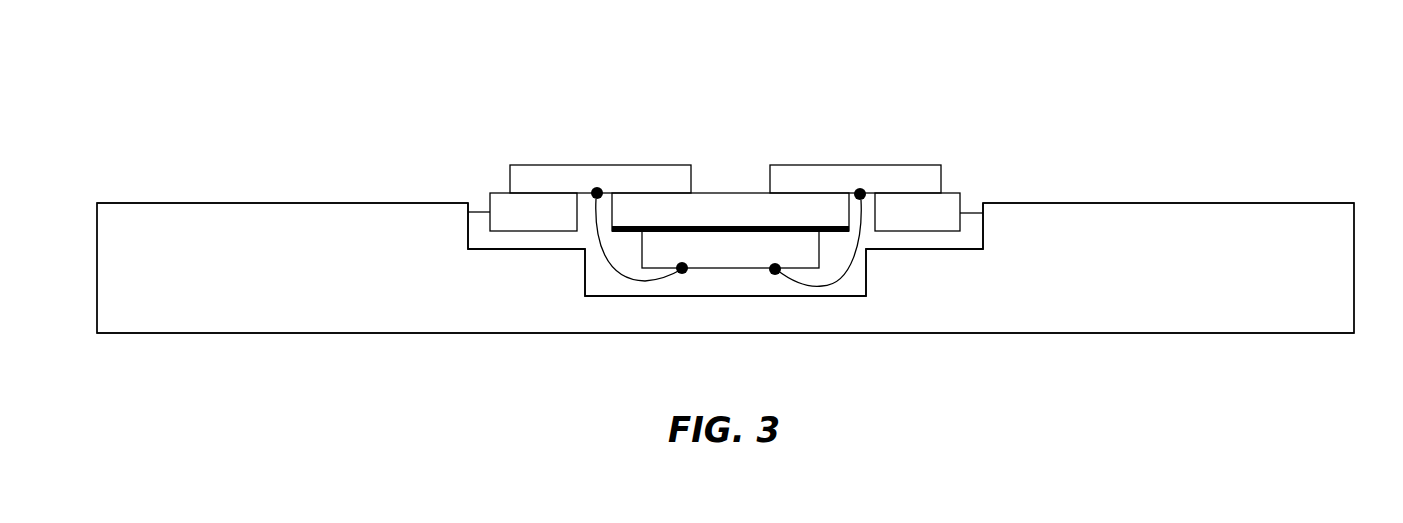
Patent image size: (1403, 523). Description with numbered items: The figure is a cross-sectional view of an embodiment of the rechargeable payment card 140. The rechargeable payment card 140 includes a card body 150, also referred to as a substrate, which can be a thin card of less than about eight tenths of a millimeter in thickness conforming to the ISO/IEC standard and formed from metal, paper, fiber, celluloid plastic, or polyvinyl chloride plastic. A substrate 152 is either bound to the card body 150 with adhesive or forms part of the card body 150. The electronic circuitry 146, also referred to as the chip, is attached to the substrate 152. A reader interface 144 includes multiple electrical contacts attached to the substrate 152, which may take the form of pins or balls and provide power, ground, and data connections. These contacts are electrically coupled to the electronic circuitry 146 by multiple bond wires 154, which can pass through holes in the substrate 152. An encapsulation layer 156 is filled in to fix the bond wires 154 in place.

The rechargeable payment card 140 is at (1132, 72).
The reader interface 144 is at (778, 165).
The electronic circuitry 146 is at (730, 249).
The card body 150 is at (1293, 203).
The substrate 152 is at (725, 212).
The bond wires 154 is at (658, 278).
The encapsulation layer 156 is at (857, 277).